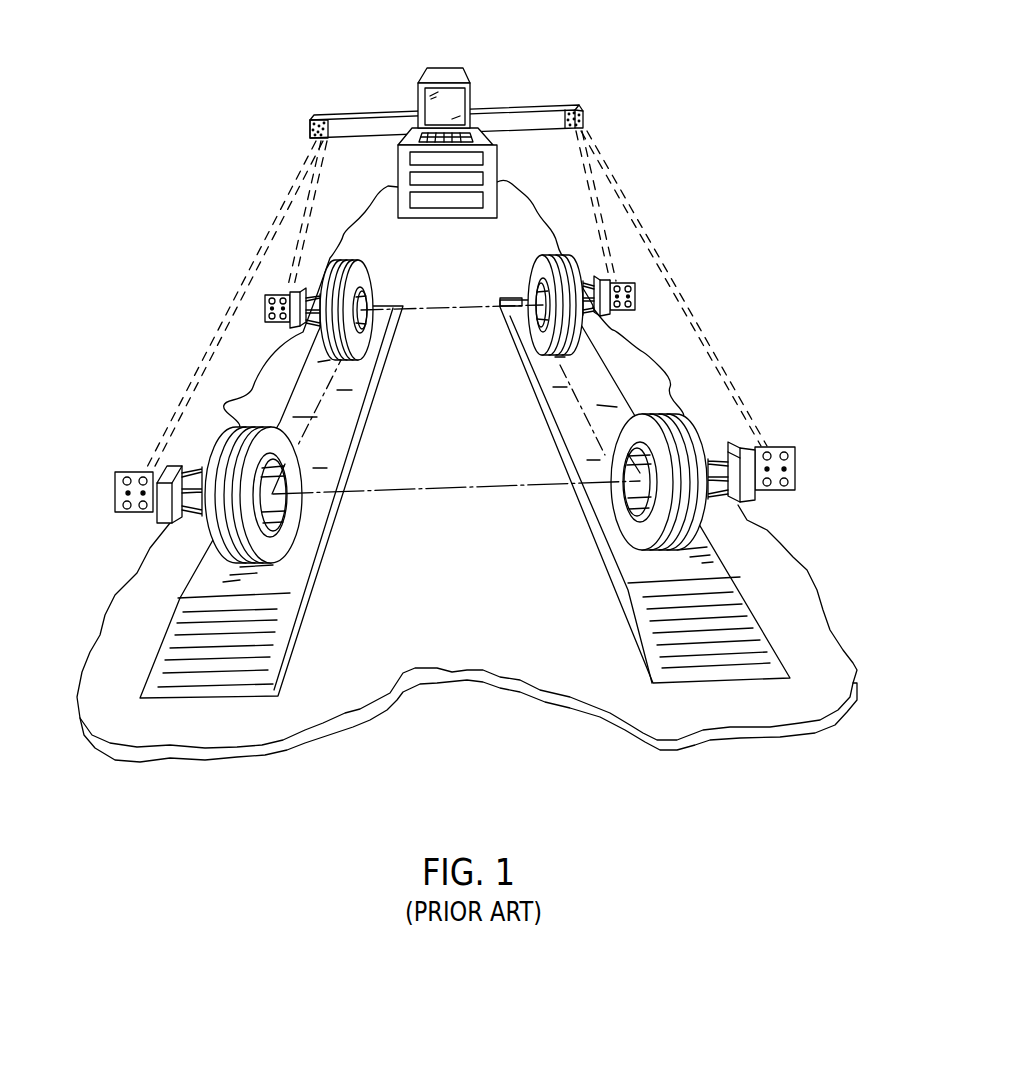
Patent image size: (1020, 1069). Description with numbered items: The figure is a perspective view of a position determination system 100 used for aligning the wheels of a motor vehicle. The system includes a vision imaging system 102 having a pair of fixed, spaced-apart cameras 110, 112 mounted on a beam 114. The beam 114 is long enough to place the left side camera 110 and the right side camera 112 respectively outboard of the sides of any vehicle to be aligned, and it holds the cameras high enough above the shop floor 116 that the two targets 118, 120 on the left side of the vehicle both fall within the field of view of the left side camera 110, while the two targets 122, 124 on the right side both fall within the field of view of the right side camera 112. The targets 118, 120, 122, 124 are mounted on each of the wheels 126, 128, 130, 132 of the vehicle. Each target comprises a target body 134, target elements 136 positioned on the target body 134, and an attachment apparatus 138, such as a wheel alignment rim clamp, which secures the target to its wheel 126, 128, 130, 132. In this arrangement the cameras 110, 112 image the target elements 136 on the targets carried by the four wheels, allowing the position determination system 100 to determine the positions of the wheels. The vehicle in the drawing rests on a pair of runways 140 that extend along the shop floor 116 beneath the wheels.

The position determination system 100 is at (772, 247).
The vision imaging system 102 is at (456, 241).
The left side camera 110 is at (308, 126).
The right side camera 112 is at (585, 112).
The beam 114 is at (393, 115).
The shop floor 116 is at (378, 237).
The target 118 is at (263, 310).
The target 120 is at (132, 462).
The target 122 is at (650, 273).
The target 124 is at (770, 458).
The wheel 126 is at (368, 343).
The wheel 128 is at (290, 536).
The wheel 130 is at (538, 342).
The wheel 132 is at (627, 517).
The target body 134 is at (771, 447).
The target elements 136 is at (790, 481).
The attachment apparatus 138 is at (727, 440).
The runways 140 is at (547, 413).